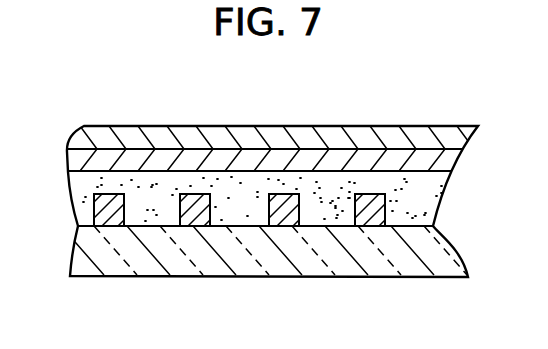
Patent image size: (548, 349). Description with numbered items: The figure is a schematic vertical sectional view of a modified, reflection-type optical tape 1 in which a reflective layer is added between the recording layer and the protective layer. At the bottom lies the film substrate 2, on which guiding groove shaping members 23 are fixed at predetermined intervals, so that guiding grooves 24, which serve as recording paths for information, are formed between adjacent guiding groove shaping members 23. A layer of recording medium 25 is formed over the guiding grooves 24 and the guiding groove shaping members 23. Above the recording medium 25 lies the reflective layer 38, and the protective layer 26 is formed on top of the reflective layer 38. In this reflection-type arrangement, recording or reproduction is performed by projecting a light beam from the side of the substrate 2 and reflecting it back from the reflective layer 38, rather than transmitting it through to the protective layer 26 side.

The optical tape 1 is at (221, 297).
The film substrate 2 is at (455, 245).
The guiding groove shaping members 23 is at (110, 190).
The guiding grooves 24 is at (158, 203).
The recording medium 25 is at (427, 202).
The protective layer 26 is at (477, 137).
The reflective layer 38 is at (462, 162).